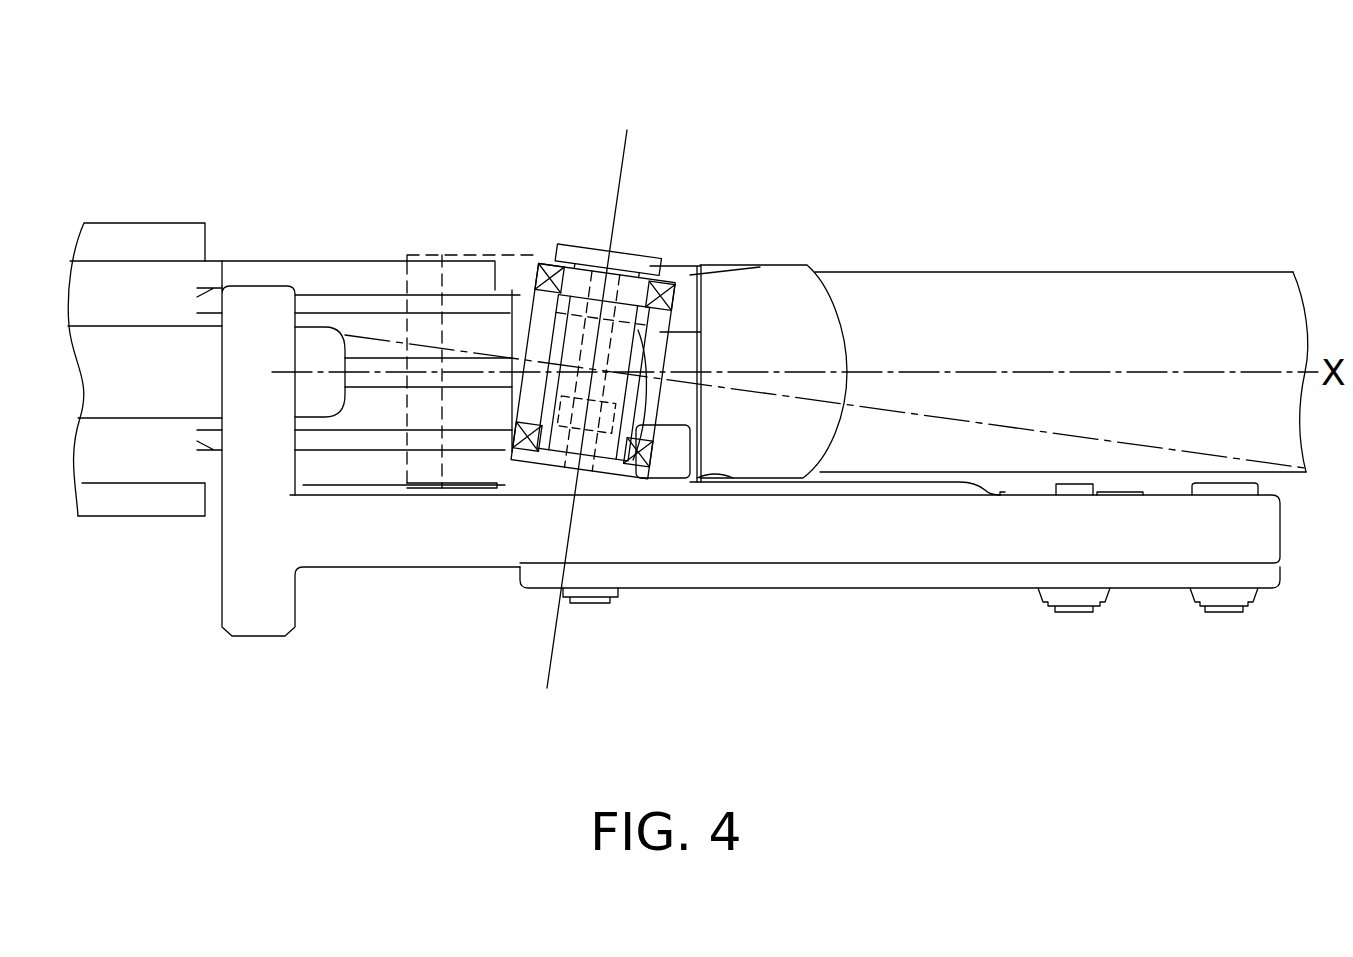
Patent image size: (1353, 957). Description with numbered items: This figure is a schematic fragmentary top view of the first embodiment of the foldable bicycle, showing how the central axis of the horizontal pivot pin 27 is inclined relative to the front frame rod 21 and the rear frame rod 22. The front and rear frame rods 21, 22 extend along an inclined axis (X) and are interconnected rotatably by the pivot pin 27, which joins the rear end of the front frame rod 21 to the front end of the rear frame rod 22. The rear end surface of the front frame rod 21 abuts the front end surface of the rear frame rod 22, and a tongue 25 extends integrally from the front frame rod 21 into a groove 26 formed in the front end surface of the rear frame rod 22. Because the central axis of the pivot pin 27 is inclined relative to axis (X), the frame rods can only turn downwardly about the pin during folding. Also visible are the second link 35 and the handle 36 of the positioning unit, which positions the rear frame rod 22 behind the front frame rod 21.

The front frame rod 21 is at (1013, 272).
The rear frame rod 22 is at (137, 223).
The tongue 25 is at (511, 258).
The groove 26 is at (645, 257).
The horizontal pivot pin 27 is at (578, 245).
The second link 35 is at (770, 592).
The handle 36 is at (418, 568).